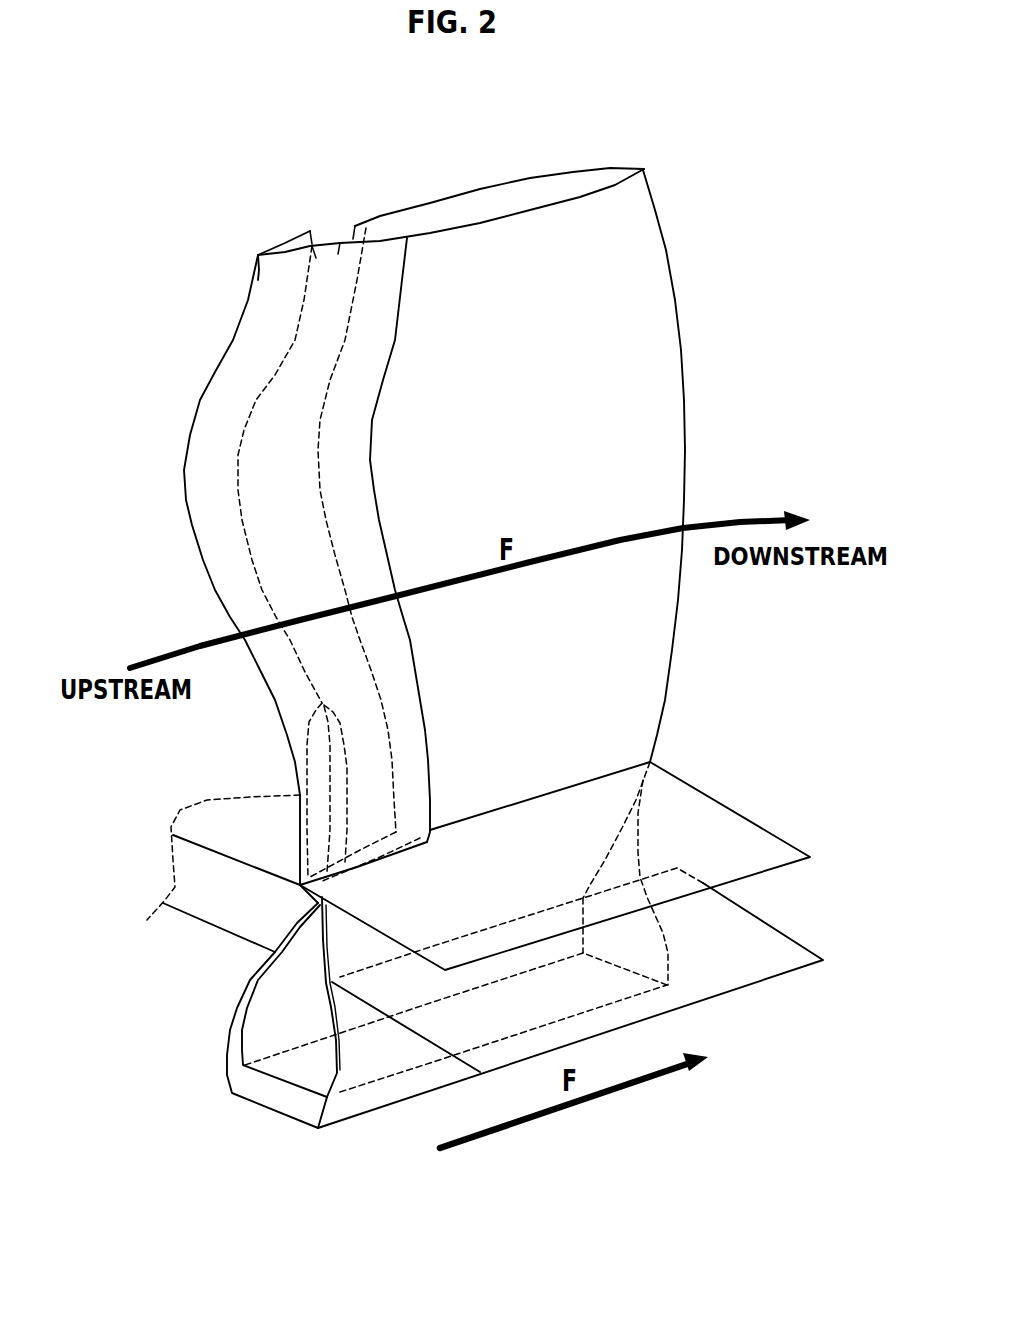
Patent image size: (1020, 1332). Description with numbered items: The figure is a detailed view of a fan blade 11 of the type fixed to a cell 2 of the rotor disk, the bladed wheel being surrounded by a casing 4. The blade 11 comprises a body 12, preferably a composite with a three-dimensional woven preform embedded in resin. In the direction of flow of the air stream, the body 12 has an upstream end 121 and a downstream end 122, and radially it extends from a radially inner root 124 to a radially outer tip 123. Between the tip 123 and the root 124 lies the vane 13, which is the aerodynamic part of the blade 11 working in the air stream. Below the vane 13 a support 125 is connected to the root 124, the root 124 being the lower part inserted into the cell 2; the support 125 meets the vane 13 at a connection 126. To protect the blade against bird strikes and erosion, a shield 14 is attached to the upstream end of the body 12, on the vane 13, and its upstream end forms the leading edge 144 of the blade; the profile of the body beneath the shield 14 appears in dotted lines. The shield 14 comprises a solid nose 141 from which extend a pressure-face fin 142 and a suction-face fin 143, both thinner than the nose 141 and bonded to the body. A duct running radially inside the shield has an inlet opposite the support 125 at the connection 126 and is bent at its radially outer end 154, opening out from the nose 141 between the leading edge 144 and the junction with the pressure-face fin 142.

The cell 2 is at (284, 1096).
The casing 4 is at (558, 861).
The blade 11 is at (121, 296).
The body 12 is at (476, 198).
The vane 13 is at (542, 432).
The shield 14 is at (304, 222).
The upstream end 121 is at (208, 512).
The downstream end 122 is at (677, 322).
The radially outer tip 123 is at (572, 187).
The radially inner root 124 is at (684, 950).
The support 125 is at (348, 960).
The connection 126 is at (247, 929).
The solid nose 141 is at (293, 247).
The pressure-face fin 142 is at (371, 223).
The suction-face fin 143 is at (341, 231).
The leading edge 144 is at (222, 610).
The radially outer end 154 is at (255, 254).